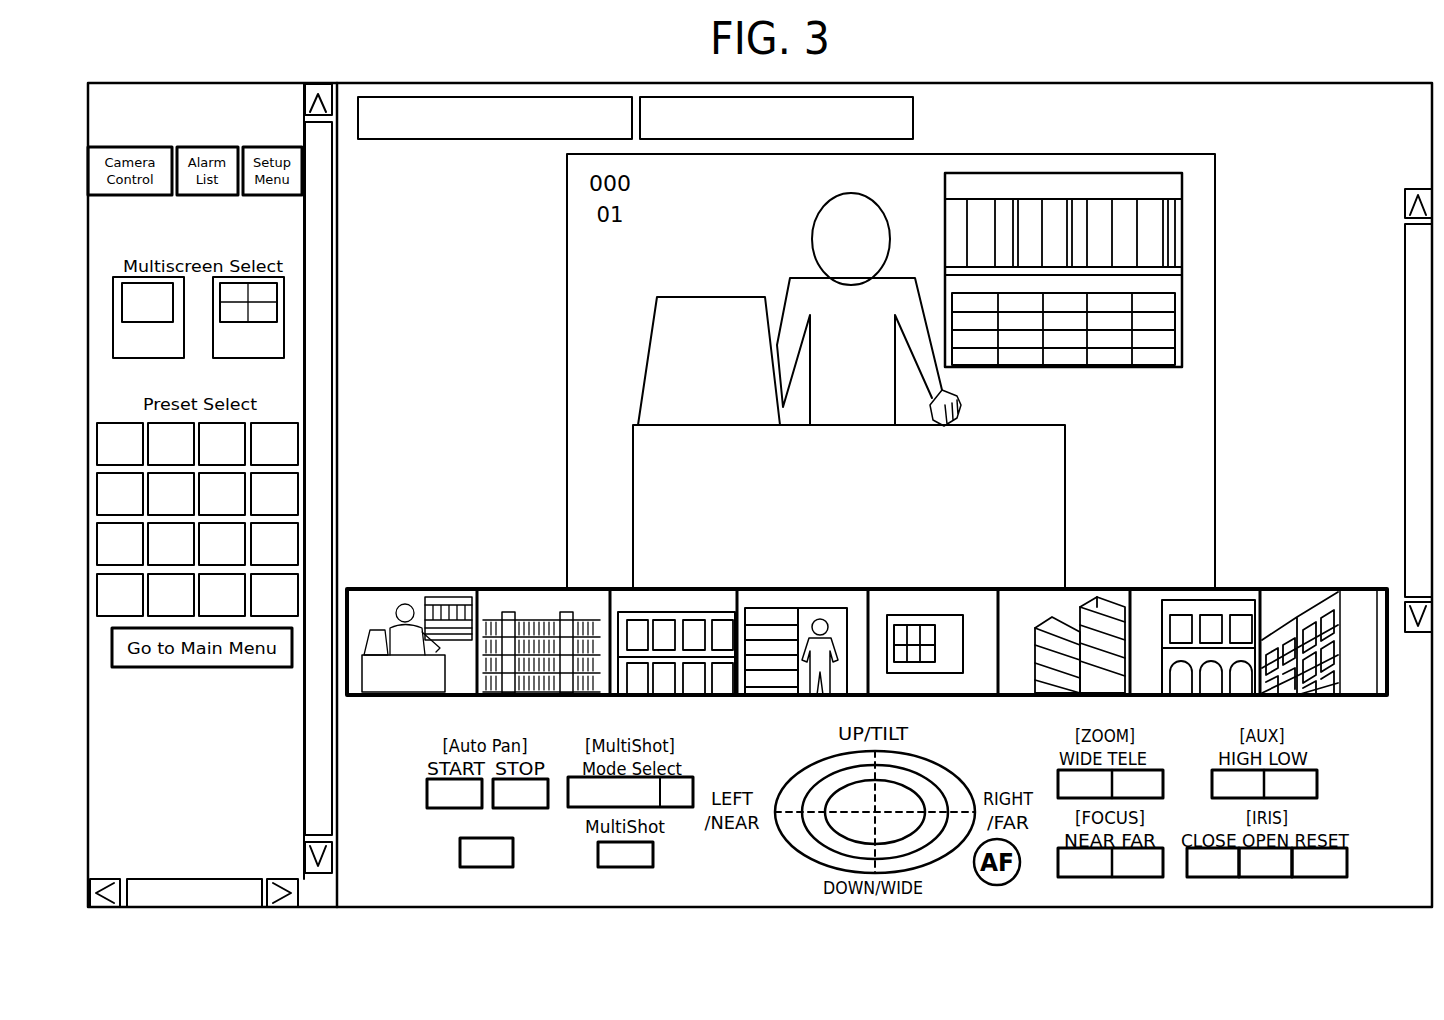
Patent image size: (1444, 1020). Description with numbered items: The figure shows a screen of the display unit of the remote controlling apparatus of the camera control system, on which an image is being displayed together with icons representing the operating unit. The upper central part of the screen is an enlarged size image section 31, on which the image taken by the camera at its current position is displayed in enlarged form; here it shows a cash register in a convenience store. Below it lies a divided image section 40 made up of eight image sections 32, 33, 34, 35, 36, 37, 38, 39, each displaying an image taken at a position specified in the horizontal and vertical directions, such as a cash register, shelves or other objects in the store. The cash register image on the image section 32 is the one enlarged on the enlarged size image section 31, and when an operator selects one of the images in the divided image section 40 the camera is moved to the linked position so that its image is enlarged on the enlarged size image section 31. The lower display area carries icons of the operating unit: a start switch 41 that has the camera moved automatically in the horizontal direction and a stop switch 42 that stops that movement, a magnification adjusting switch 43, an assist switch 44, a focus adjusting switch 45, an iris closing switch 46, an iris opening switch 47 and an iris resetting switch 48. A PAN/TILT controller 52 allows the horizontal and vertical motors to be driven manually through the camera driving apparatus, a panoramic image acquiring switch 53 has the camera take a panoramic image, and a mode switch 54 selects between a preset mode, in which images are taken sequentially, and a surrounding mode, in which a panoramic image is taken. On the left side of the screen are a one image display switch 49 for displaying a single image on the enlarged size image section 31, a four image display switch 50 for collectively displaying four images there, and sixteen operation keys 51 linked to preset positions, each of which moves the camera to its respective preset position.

The enlarged size image section 31 is at (1215, 260).
The image section 32 is at (428, 589).
The image section 33 is at (528, 589).
The image section 34 is at (695, 697).
The image section 35 is at (790, 697).
The image section 36 is at (930, 697).
The image section 37 is at (1025, 697).
The image section 38 is at (1190, 697).
The image section 39 is at (1322, 697).
The divided image section 40 is at (1292, 582).
The start switch 41 is at (427, 793).
The stop switch 42 is at (549, 790).
The magnification adjusting switch 43 is at (1165, 779).
The assist switch 44 is at (1318, 786).
The focus adjusting switch 45 is at (1078, 878).
The iris closing switch 46 is at (1228, 882).
The iris opening switch 47 is at (1255, 878).
The iris resetting switch 48 is at (1348, 862).
The one image display switch 49 is at (140, 359).
The four image display switch 50 is at (240, 359).
The operation keys 51 is at (300, 487).
The PAN/TILT controller 52 is at (948, 838).
The panoramic image acquiring switch 53 is at (618, 868).
The mode switch 54 is at (582, 808).